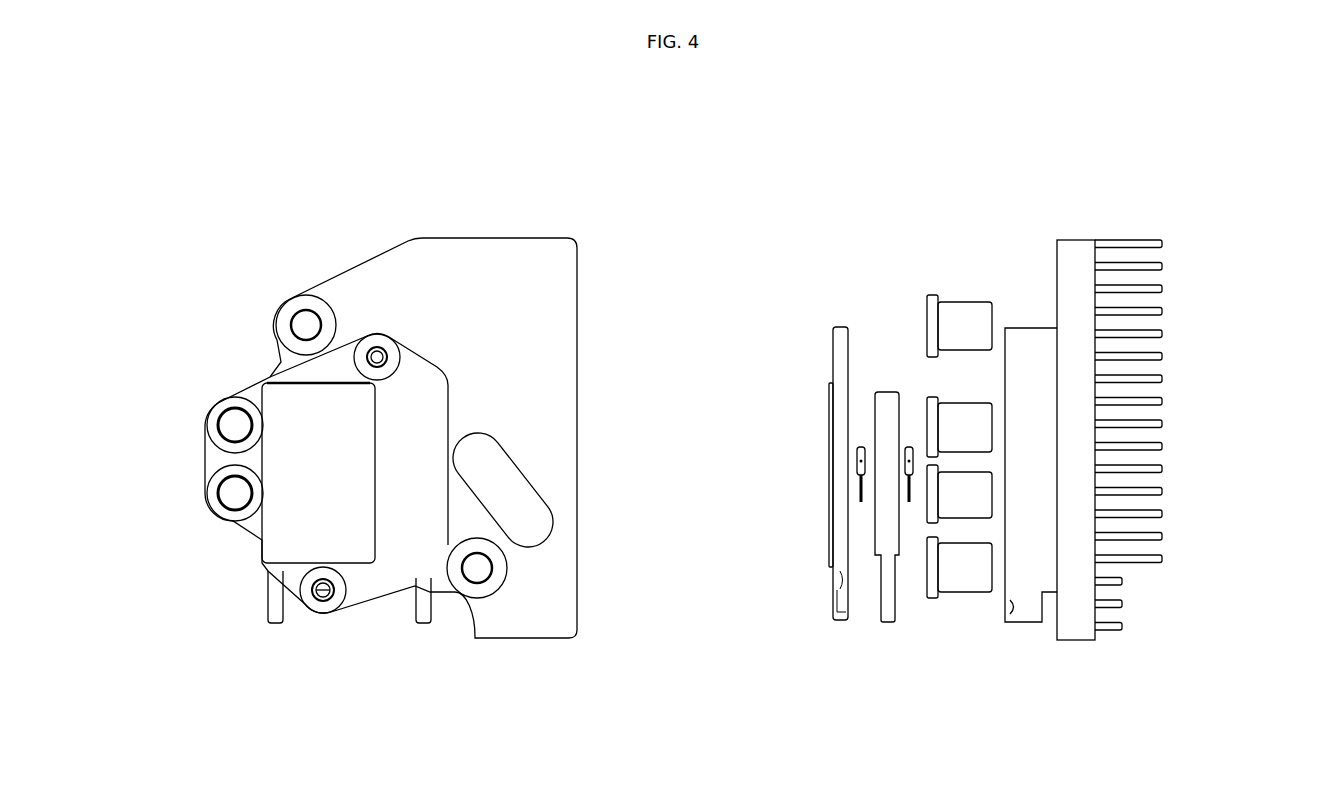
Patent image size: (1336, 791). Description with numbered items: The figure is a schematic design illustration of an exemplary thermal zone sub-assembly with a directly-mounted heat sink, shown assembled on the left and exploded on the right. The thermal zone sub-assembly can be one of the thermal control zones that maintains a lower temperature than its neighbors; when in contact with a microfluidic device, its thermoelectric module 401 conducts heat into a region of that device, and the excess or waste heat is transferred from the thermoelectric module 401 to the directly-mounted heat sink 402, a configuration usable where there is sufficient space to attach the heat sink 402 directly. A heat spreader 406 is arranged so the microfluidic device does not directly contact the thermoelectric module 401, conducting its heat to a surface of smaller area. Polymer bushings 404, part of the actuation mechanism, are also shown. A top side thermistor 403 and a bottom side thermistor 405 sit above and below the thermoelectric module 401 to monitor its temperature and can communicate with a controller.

The thermoelectric module 401 is at (425, 604).
The directly-mounted heat sink 402 is at (470, 290).
The top side thermistor 403 is at (858, 446).
The polymer bushings 404 is at (215, 482).
The bottom side thermistor 405 is at (910, 446).
The heat spreader 406 is at (337, 410).